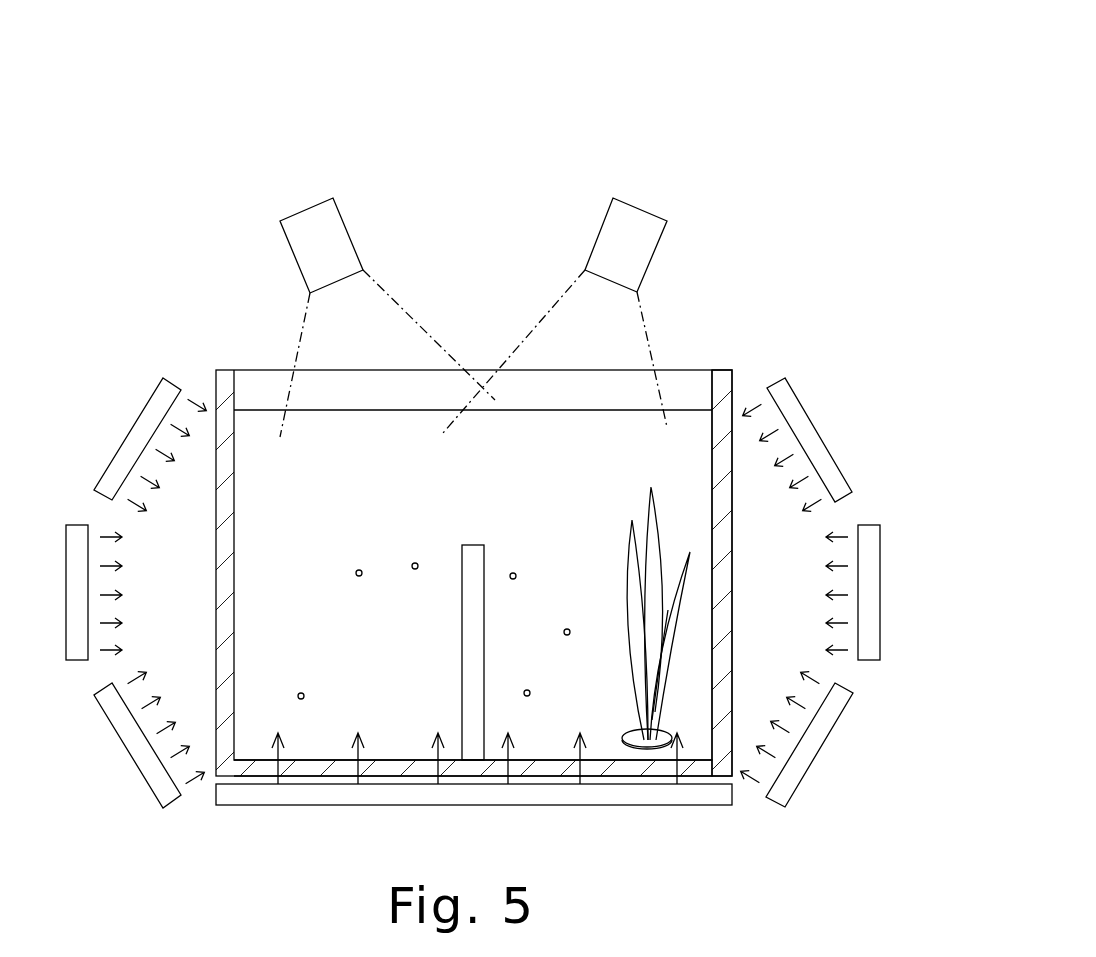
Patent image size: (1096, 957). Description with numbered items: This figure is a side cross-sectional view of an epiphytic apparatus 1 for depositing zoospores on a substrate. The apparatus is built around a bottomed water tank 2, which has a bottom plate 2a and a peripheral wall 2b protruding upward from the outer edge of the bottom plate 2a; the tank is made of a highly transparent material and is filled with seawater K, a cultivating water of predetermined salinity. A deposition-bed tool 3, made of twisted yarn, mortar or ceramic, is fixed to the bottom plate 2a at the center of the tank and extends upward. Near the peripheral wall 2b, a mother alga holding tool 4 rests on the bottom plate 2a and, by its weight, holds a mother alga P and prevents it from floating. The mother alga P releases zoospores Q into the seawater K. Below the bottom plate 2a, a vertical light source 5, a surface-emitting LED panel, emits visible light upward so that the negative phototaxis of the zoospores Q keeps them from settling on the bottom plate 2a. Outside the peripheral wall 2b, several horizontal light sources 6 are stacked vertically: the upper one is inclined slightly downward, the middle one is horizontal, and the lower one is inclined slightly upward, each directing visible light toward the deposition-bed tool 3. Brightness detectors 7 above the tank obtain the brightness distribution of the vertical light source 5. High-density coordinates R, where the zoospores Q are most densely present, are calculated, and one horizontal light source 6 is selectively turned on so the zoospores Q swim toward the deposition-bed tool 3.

The epiphytic apparatus 1 is at (752, 55).
The bottomed water tank 2 is at (532, 545).
The bottom plate 2a is at (700, 766).
The peripheral wall 2b is at (724, 551).
The deposition-bed tool 3 is at (474, 556).
The mother alga holding tool 4 is at (630, 731).
The vertical light source 5 is at (724, 797).
The horizontal light source 6 is at (147, 410).
The brightness detector 7 is at (338, 216).
The seawater K is at (319, 456).
The mother alga P is at (606, 525).
The zoospores Q is at (361, 570).
The high-density coordinates R is at (342, 598).